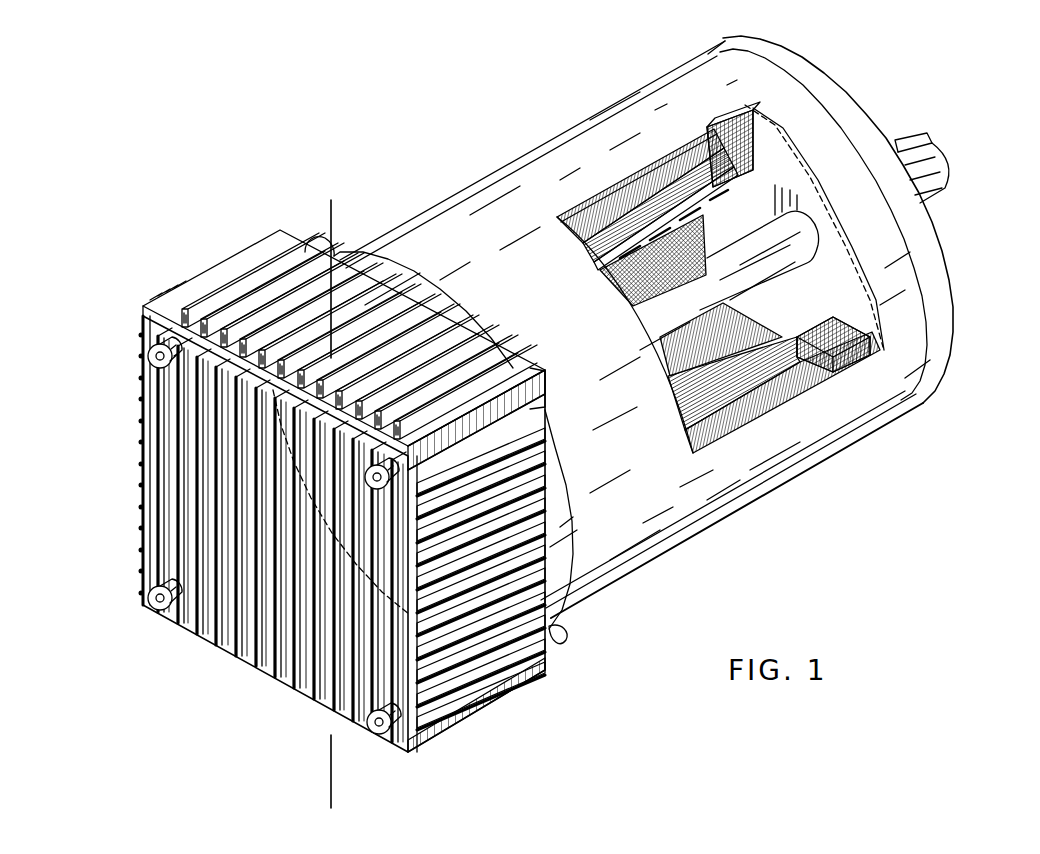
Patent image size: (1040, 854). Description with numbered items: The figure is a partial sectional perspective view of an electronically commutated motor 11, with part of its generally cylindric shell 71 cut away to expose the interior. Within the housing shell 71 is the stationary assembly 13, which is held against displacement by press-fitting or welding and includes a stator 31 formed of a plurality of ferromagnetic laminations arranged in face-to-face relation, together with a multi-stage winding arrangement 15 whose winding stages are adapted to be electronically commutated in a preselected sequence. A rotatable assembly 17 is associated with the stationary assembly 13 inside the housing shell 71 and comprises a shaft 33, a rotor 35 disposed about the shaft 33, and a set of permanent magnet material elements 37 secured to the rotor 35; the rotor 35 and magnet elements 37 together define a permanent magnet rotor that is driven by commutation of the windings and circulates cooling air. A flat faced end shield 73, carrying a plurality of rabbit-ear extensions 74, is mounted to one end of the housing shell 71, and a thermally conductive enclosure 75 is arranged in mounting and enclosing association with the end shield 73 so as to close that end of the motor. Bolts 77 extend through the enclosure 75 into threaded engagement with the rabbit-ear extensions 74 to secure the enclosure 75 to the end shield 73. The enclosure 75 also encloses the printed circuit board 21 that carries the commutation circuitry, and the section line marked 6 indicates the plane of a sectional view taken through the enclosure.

The electronically commutated motor 11 is at (978, 311).
The stationary assembly 13 is at (580, 187).
The multi-stage winding arrangement 15 is at (848, 318).
The rotatable assembly 17 is at (800, 313).
The printed circuit board 21 is at (753, 137).
The stator 31 is at (648, 172).
The shaft 33 is at (942, 170).
The rotor 35 is at (703, 237).
The permanent magnet material elements 37 is at (707, 204).
The cylindric shell 71 is at (861, 430).
The flat faced end shield 73 is at (375, 268).
The rabbit-ear extensions 74 is at (552, 637).
The thermally conductive enclosure 75 is at (130, 528).
The bolts 77 is at (149, 333).
The section line 6- 6 is at (333, 217).